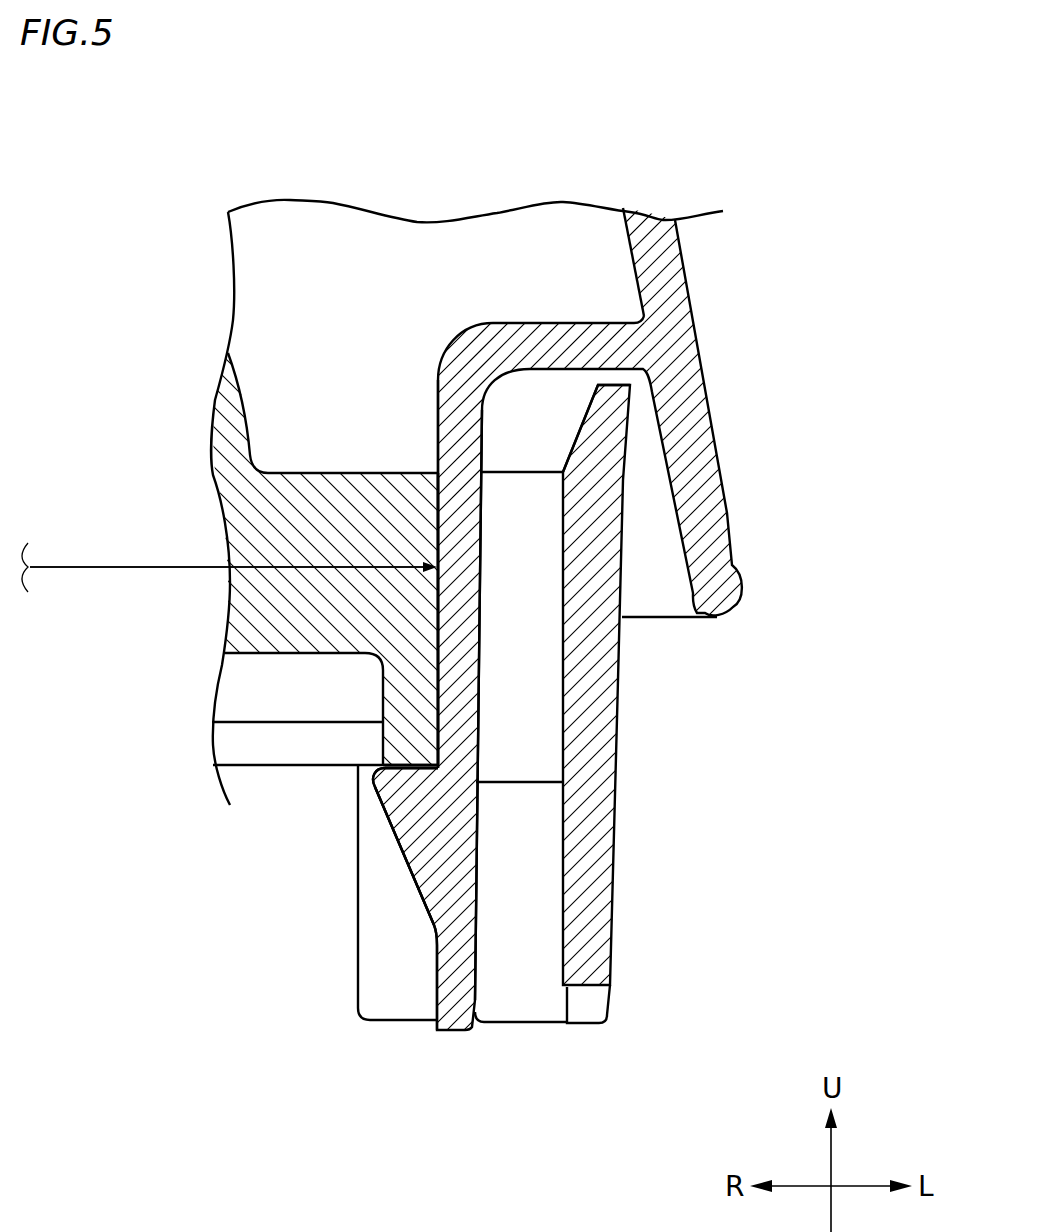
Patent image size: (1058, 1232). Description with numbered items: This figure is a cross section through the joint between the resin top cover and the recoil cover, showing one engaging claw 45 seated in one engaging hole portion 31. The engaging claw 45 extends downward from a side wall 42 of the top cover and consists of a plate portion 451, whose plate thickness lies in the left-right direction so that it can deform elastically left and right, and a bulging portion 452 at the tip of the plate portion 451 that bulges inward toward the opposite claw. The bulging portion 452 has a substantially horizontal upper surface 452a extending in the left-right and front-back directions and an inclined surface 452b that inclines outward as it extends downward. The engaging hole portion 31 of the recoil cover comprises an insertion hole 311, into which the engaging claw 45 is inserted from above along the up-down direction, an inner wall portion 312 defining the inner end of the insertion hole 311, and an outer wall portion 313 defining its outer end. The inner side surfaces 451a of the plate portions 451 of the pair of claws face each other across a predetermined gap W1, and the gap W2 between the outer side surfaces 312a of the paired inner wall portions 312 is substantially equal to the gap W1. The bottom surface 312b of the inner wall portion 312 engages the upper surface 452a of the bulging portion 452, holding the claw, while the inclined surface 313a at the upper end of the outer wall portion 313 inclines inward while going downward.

The engaging hole portion 31 is at (510, 538).
The insertion hole 311 is at (484, 569).
The inner wall portion 312 is at (417, 678).
The outer side surface 312a is at (440, 722).
The bottom surface 312b is at (392, 778).
The outer wall portion 313 is at (613, 837).
The inclined surface 313a is at (583, 407).
The side wall 42 is at (697, 342).
The engaging claw 45 is at (482, 693).
The plate portion 451 is at (480, 632).
The inner side surface 451a is at (437, 636).
The bulging portion 452 is at (417, 873).
The upper surface 452a is at (420, 762).
The inclined surface 452b is at (331, 903).
The gap W1 is at (229, 562).
The gap W2 is at (227, 549).